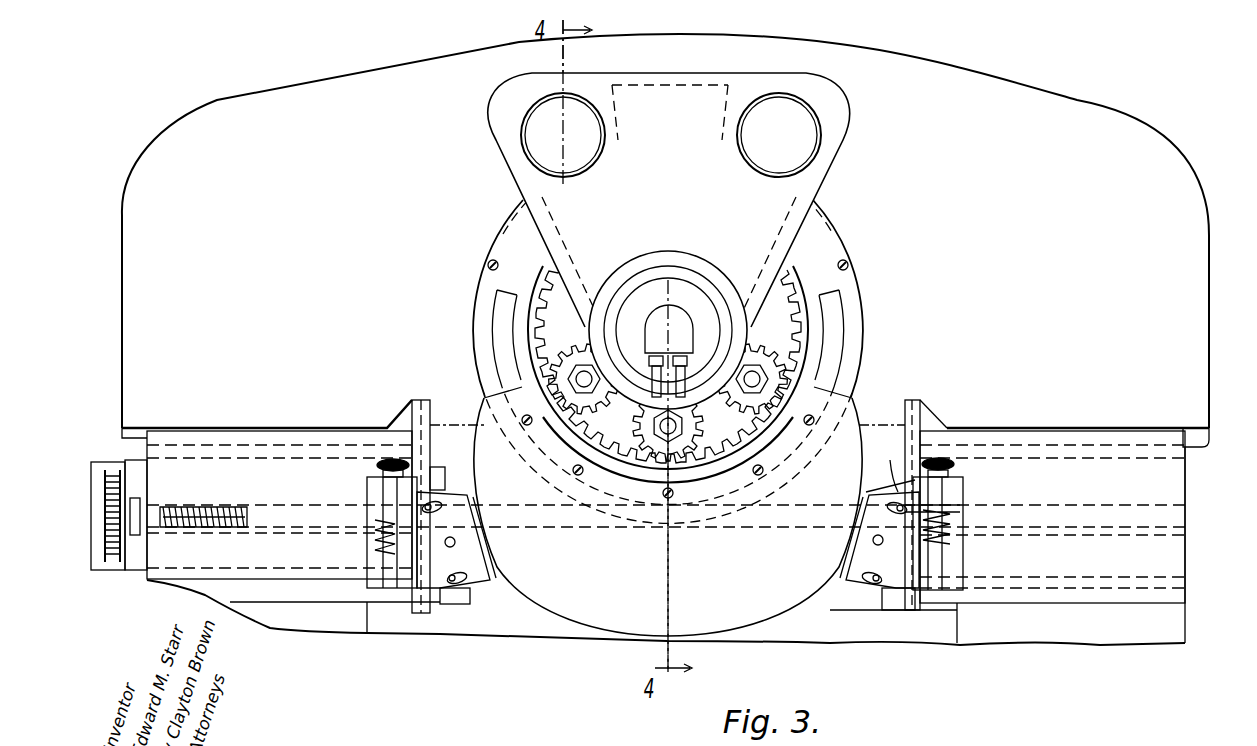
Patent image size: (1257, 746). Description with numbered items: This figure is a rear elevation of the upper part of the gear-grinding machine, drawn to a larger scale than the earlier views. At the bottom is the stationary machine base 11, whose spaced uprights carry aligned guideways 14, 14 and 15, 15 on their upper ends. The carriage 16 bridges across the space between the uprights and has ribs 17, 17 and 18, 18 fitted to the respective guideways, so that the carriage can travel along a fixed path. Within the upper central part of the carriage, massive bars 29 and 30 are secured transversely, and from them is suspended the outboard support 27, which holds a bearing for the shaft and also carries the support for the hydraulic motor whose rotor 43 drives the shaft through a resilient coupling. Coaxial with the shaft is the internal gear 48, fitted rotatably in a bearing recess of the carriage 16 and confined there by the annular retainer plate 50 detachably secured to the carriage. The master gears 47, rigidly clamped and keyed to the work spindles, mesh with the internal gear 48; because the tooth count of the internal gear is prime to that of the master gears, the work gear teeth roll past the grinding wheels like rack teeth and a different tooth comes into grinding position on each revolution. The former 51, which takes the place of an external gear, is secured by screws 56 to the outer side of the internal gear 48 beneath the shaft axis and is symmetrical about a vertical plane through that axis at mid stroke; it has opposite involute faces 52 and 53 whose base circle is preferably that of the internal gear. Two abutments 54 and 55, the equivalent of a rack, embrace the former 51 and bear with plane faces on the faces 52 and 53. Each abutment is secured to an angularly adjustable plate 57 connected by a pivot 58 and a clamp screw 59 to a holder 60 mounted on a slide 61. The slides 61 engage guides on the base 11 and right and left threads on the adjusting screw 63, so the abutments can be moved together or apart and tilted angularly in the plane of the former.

The stationary machine base 11 is at (1128, 640).
The guideways 14 is at (180, 447).
The guideways 15 is at (1112, 447).
The carriage 16 is at (1075, 125).
The ribs 17 is at (123, 432).
The ribs 18 is at (1207, 443).
The outboard support 27 is at (545, 206).
The massive bar 29 is at (545, 135).
The massive bar 30 is at (805, 136).
The rotor 43 is at (690, 290).
The master gears 47 is at (572, 350).
The internal gear 48 is at (500, 328).
The annular retainer plate 50 is at (508, 290).
The former 51 is at (585, 610).
The involute face 52 is at (824, 597).
The involute face 53 is at (512, 597).
The abutment 54 is at (864, 491).
The abutment 55 is at (470, 490).
The screws 56 is at (575, 473).
The angularly adjustable plates 57 is at (473, 565).
The pivots 58 is at (457, 541).
The clamp screws 59 is at (451, 588).
The holders 60 is at (372, 489).
The slides 61 is at (335, 458).
The adjusting screw 63 is at (275, 508).